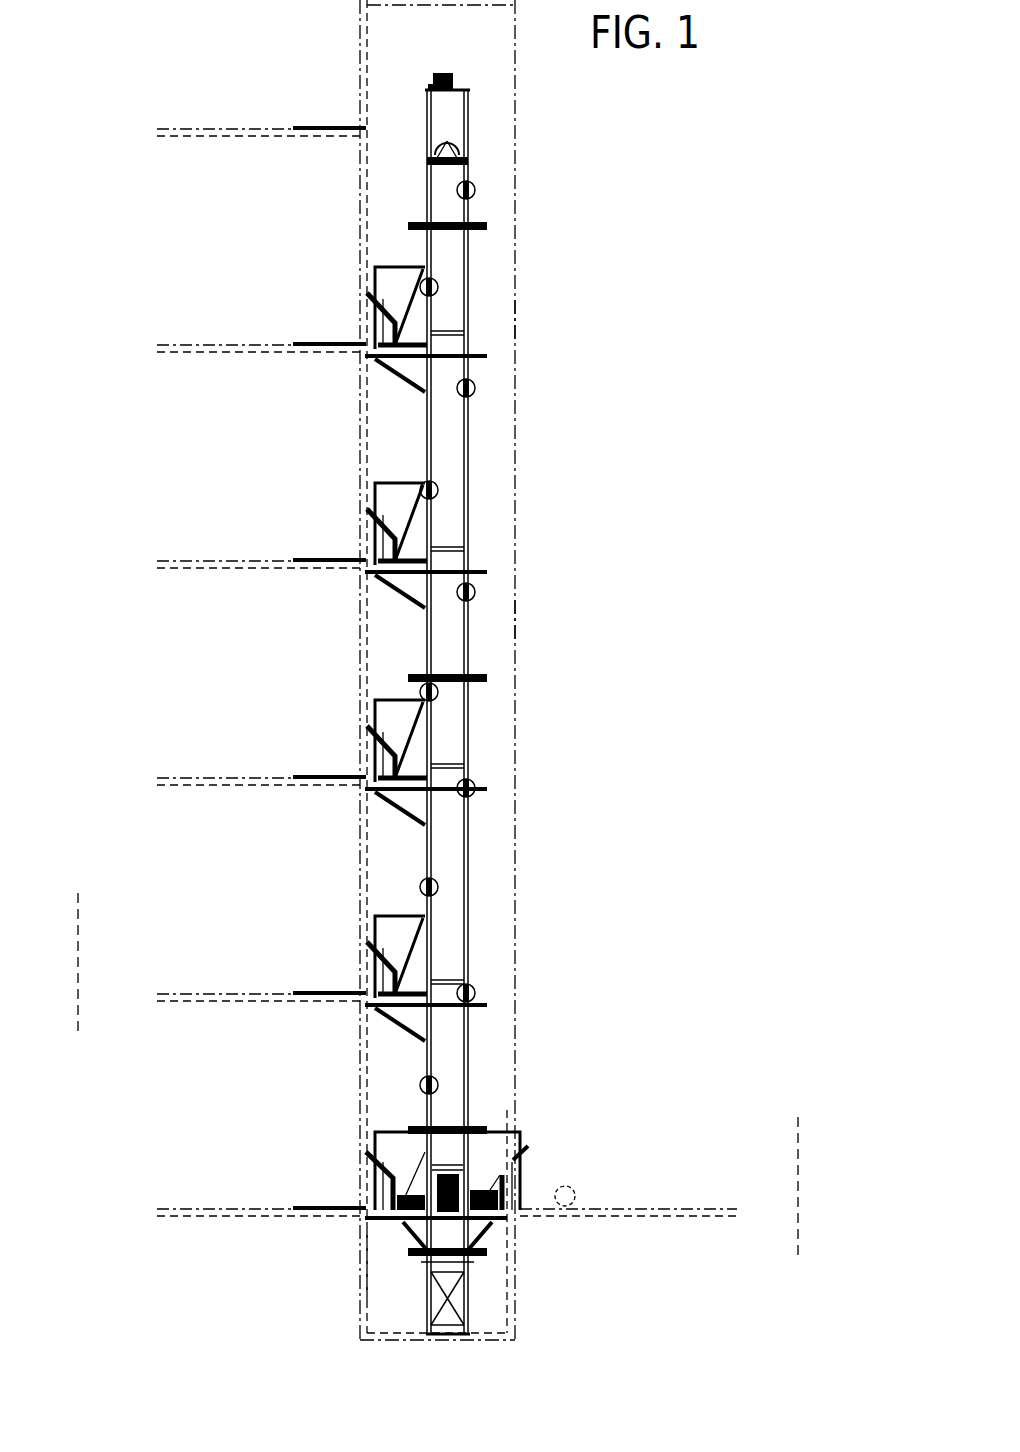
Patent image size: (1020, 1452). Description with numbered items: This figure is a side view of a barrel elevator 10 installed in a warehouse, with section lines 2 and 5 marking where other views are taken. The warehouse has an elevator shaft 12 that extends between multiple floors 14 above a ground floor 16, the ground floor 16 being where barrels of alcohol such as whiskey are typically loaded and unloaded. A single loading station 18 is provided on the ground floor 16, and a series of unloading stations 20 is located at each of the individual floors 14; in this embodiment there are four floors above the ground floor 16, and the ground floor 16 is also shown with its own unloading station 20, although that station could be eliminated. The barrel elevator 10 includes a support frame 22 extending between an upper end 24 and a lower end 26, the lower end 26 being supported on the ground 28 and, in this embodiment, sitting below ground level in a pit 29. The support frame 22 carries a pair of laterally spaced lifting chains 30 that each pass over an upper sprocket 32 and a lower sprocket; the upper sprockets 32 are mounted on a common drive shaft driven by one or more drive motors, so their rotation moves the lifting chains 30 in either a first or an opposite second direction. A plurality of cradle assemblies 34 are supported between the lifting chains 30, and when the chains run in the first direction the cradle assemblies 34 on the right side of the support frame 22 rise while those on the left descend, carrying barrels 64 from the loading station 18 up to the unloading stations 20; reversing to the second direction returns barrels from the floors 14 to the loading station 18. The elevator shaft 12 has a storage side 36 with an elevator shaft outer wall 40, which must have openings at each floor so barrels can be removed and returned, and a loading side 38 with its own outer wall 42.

The barrel elevator 10 is at (458, 699).
The elevator shaft 12 is at (516, 272).
The floors 14 is at (215, 345).
The ground floor 16 is at (215, 1208).
The loading station 18 is at (533, 1137).
The unloading stations 20 is at (348, 318).
The support frame 22 is at (470, 110).
The upper end 24 is at (469, 88).
The lower end 26 is at (470, 1296).
The ground 28 is at (487, 1343).
The pit 29 is at (360, 1272).
The lifting chains 30 is at (426, 855).
The upper sprocket 32 is at (470, 152).
The cradle assemblies 34 is at (472, 976).
The storage side 36 is at (360, 88).
The loading side 38 is at (517, 337).
The elevator shaft outer wall 40 is at (360, 32).
The outer wall 42 is at (516, 638).
The barrels 64 is at (476, 776).
The section line 2- 2 is at (798, 1117).
The section line 5- 5 is at (78, 893).